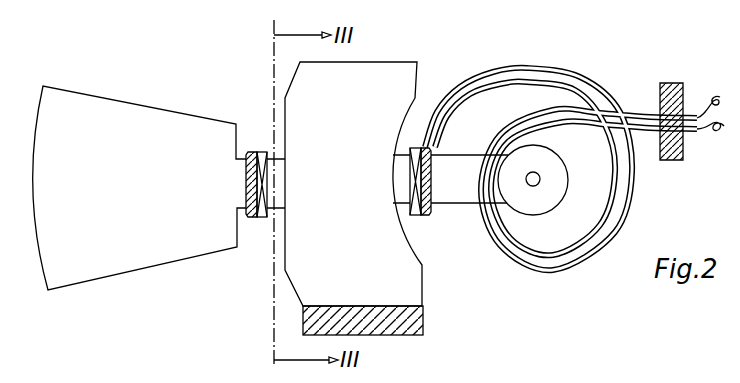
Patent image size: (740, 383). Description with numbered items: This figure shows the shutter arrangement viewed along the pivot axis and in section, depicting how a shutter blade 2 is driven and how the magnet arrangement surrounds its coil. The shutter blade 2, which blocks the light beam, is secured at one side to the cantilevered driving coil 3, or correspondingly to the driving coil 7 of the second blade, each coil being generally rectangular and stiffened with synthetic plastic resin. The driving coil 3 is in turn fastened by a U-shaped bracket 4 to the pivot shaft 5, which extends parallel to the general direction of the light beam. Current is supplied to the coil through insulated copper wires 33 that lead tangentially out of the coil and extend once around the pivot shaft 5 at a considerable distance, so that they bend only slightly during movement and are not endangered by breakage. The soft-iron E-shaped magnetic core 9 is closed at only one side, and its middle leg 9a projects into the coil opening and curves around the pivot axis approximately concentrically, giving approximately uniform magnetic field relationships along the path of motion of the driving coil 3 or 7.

The shutter blade 2 is at (193, 250).
The driving coil 3 is at (245, 154).
The driving coil 7 is at (254, 152).
The U-shaped bracket 4 is at (450, 165).
The pivot shaft 5 is at (538, 184).
The E-shaped magnetic core 9 is at (412, 318).
The middle leg 9a is at (408, 287).
The insulated copper wires 33 is at (530, 78).